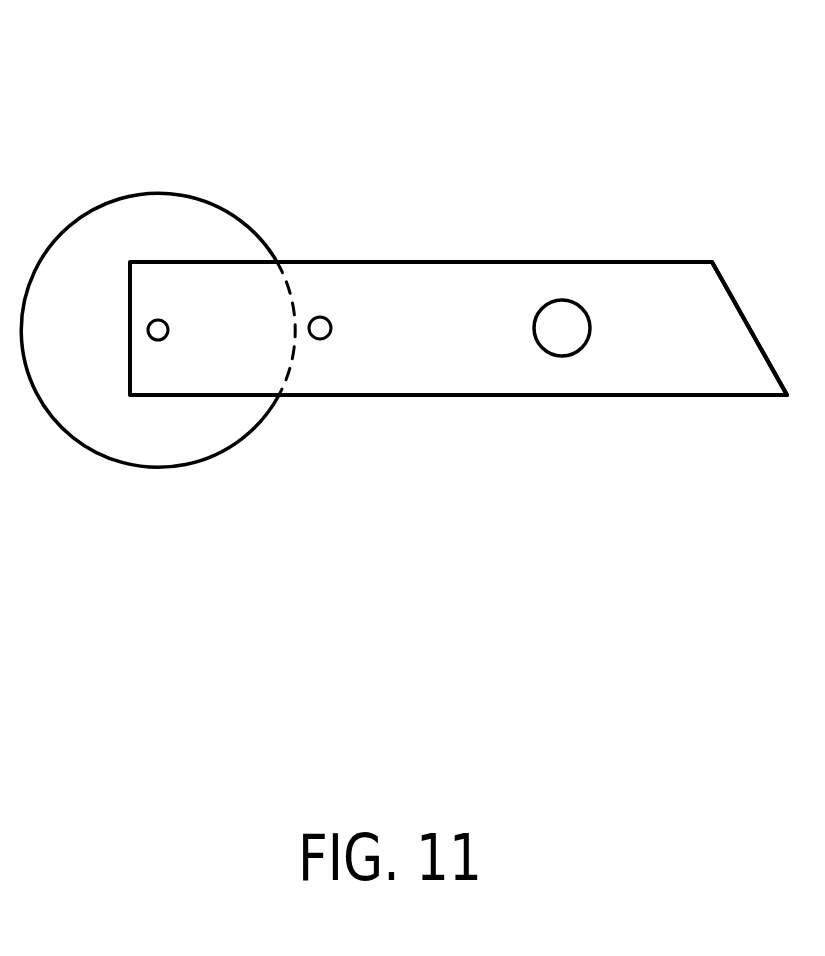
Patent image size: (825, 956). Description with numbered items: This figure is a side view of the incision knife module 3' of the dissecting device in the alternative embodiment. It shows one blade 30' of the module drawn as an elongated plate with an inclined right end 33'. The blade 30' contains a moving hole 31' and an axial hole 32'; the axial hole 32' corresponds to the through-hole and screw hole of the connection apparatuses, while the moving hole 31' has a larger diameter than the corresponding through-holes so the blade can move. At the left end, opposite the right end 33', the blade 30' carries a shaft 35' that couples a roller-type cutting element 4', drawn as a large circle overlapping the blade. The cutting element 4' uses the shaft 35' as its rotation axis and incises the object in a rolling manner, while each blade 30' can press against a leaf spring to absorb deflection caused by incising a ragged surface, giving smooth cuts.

The incision knife module 3' is at (468, 283).
The cutting element 4' is at (158, 379).
The blade 30' is at (458, 388).
The moving hole 31' is at (586, 403).
The axial hole 32' is at (338, 404).
The right end 33' is at (759, 384).
The shaft 35' is at (200, 435).